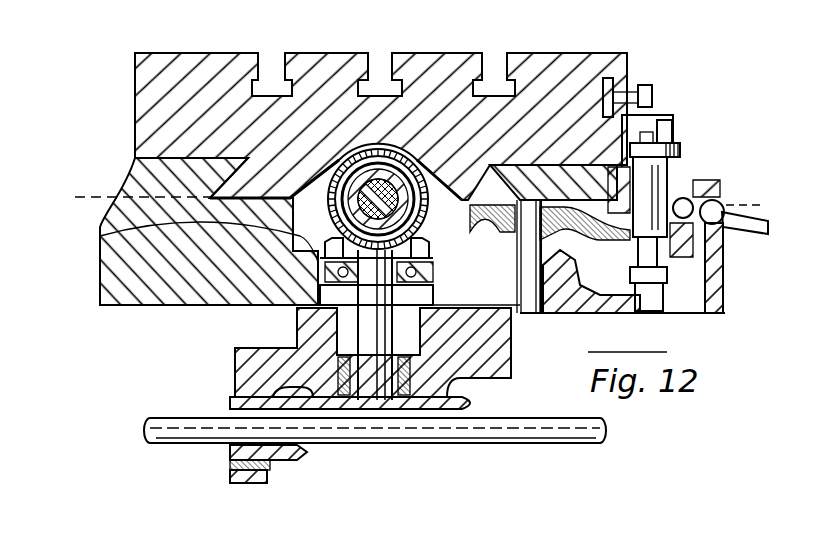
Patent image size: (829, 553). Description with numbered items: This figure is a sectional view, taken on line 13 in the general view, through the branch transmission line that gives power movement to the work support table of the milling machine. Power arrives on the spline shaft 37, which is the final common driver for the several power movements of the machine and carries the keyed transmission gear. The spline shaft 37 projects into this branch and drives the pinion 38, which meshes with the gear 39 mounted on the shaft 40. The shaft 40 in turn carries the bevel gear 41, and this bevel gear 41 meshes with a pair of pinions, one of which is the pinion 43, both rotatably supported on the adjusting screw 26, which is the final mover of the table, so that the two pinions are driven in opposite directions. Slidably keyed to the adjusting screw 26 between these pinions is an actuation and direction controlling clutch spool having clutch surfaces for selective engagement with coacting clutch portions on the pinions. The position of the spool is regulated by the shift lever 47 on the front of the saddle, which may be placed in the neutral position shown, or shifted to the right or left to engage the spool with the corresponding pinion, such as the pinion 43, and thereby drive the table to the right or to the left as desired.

The section line / lever 13 is at (416, 209).
The adjusting screw 26 is at (415, 187).
The spline shaft 37 is at (580, 440).
The pinion 38 is at (293, 457).
The gear 39 is at (470, 402).
The shaft 40 is at (420, 333).
The bevel gear 41 is at (100, 236).
The pinion 43 is at (352, 158).
The shift lever 47 is at (408, 170).